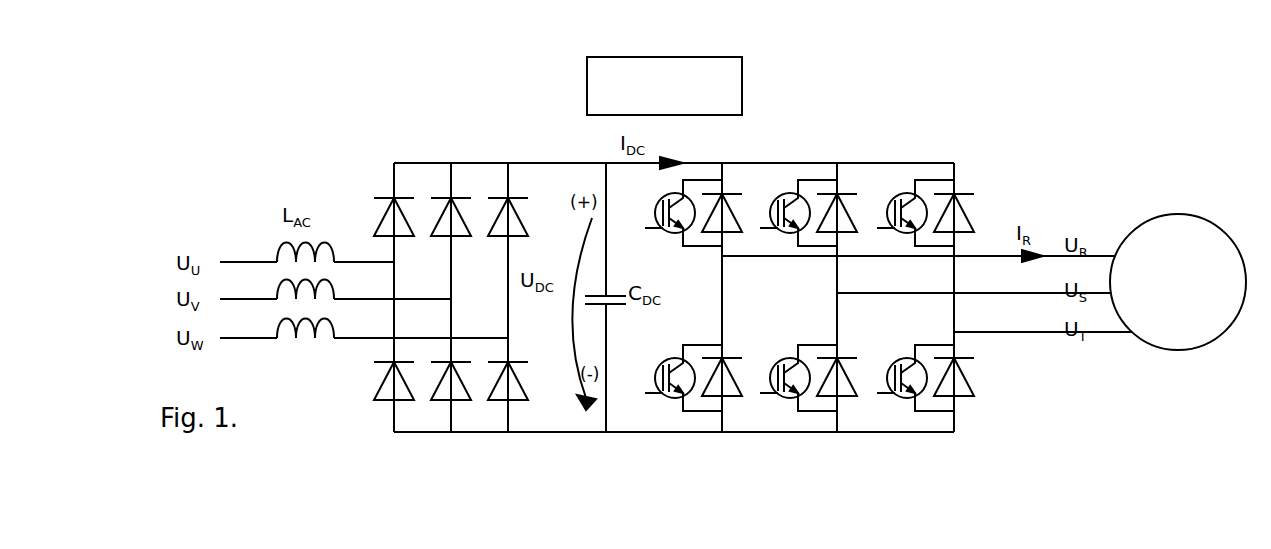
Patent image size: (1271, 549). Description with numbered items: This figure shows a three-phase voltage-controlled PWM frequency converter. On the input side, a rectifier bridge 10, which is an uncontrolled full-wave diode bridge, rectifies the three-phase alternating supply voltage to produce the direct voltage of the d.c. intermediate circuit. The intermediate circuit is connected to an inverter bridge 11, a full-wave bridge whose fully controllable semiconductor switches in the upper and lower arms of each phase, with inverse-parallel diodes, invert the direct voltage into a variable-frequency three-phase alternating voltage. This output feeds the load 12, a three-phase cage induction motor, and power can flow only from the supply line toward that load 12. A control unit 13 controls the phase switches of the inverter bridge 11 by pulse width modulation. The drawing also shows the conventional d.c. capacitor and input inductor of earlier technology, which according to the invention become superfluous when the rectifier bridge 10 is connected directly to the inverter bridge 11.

The rectifier bridge 10 is at (464, 279).
The inverter bridge 11 is at (815, 278).
The load 12 is at (1178, 264).
The control unit 13 is at (748, 72).